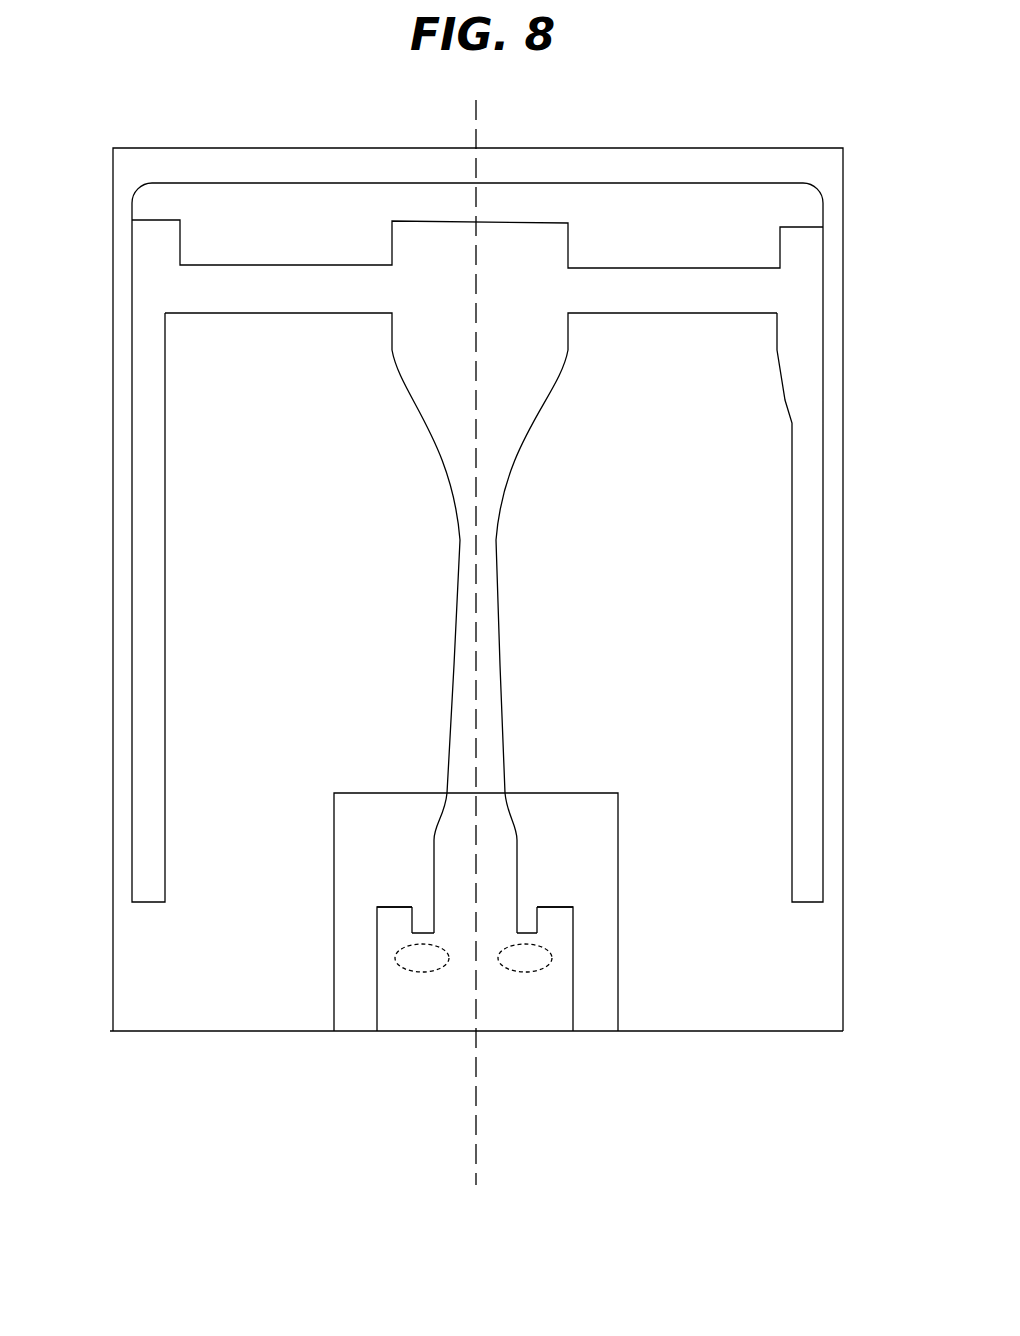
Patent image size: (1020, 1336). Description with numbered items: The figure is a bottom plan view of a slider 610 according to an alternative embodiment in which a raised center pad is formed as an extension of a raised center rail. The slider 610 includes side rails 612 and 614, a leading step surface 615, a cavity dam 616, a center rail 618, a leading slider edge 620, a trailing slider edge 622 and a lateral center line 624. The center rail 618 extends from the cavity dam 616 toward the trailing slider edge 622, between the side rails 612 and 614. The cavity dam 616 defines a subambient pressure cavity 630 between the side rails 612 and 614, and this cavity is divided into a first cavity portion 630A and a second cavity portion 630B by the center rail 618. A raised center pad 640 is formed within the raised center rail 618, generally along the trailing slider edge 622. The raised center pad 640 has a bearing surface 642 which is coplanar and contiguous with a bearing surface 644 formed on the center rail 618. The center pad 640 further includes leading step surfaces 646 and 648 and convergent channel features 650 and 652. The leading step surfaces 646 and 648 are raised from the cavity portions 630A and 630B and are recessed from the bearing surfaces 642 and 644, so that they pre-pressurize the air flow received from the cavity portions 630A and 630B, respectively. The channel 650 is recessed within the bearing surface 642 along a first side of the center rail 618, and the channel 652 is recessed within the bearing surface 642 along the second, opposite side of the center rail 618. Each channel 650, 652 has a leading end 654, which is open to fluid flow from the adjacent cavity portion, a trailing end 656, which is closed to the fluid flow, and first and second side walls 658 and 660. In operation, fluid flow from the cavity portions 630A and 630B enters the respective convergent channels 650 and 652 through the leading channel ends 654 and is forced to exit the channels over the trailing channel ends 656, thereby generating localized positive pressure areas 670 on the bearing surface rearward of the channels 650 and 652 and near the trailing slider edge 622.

The slider 610 is at (719, 78).
The side rail 612 is at (157, 543).
The side rail 614 is at (800, 543).
The leading step surface 615 is at (316, 213).
The cavity dam 616 is at (597, 290).
The center rail 618 is at (483, 498).
The leading slider edge 620 is at (263, 147).
The trailing slider edge 622 is at (262, 1033).
The lateral center line 624 is at (478, 1125).
The subambient pressure cavity 630 is at (312, 391).
The first cavity portion 630A is at (298, 492).
The second cavity portion 630B is at (709, 455).
The raised center pad 640 is at (622, 807).
The bearing surface 642 is at (446, 1021).
The bearing surface 644 is at (475, 615).
The leading step surface 646 is at (372, 806).
The leading step surface 648 is at (560, 810).
The convergent channel feature 650 is at (422, 900).
The convergent channel feature 652 is at (549, 886).
The leading end 654 is at (528, 917).
The trailing end 656 is at (415, 936).
The first side wall 658 is at (520, 921).
The second side wall 660 is at (412, 923).
The localized positive pressure area 670 is at (523, 971).